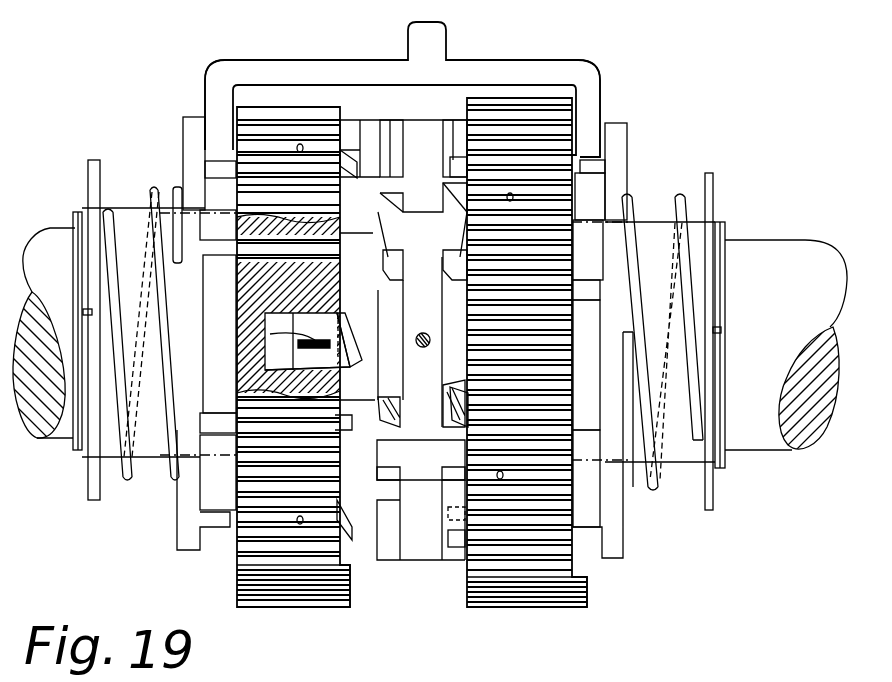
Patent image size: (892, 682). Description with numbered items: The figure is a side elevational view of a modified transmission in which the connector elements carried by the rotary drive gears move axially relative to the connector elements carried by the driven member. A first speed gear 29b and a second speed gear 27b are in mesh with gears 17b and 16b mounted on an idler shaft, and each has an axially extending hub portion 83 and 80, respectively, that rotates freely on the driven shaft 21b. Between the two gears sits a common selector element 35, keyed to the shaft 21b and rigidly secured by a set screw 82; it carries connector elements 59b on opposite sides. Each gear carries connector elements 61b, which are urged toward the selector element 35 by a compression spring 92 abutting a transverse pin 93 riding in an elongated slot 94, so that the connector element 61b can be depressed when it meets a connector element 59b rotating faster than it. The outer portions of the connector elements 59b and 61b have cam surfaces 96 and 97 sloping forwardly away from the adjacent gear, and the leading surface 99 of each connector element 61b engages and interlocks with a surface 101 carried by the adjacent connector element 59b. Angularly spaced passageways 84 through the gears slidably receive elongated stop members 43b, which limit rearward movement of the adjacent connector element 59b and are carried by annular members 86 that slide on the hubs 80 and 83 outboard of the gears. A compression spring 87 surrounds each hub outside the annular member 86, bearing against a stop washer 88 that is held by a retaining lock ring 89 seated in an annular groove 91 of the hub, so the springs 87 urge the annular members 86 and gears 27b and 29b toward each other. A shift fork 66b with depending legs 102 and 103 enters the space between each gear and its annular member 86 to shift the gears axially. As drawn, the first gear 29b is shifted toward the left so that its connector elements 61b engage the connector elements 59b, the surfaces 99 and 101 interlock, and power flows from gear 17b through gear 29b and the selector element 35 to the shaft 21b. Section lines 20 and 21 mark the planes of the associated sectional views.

The gear 16b is at (330, 604).
The gear 17b is at (572, 606).
The section line for FIG. 20 is at (372, 112).
The section line for FIG. 21 is at (455, 52).
The driven shaft 21b is at (63, 221).
The second speed gear 27b is at (245, 545).
The first speed gear 29b is at (572, 548).
The common selector element 35 is at (420, 565).
The elongated stop member 43b is at (210, 163).
The connector element 59b is at (456, 228).
The connector element 61b is at (357, 150).
The shift fork 66b is at (409, 40).
The hub portion 80 is at (150, 200).
The set screw 82 is at (418, 333).
The hub portion 83 is at (693, 222).
The passageway 84 is at (238, 262).
The annular member 86 is at (183, 117).
The compression spring 87 is at (128, 480).
The stop washer 88 is at (98, 160).
The retaining lock ring 89 is at (82, 457).
The annular groove 91 is at (86, 308).
The compression spring 92 is at (313, 340).
The transverse pin 93 is at (270, 338).
The elongated slot 94 is at (262, 380).
The cam surface 96 is at (420, 262).
The cam surface 97 is at (355, 150).
The leading surface 99 is at (356, 165).
The interlock surface 101 is at (398, 193).
The depending leg 102 is at (215, 110).
The depending leg 103 is at (588, 115).